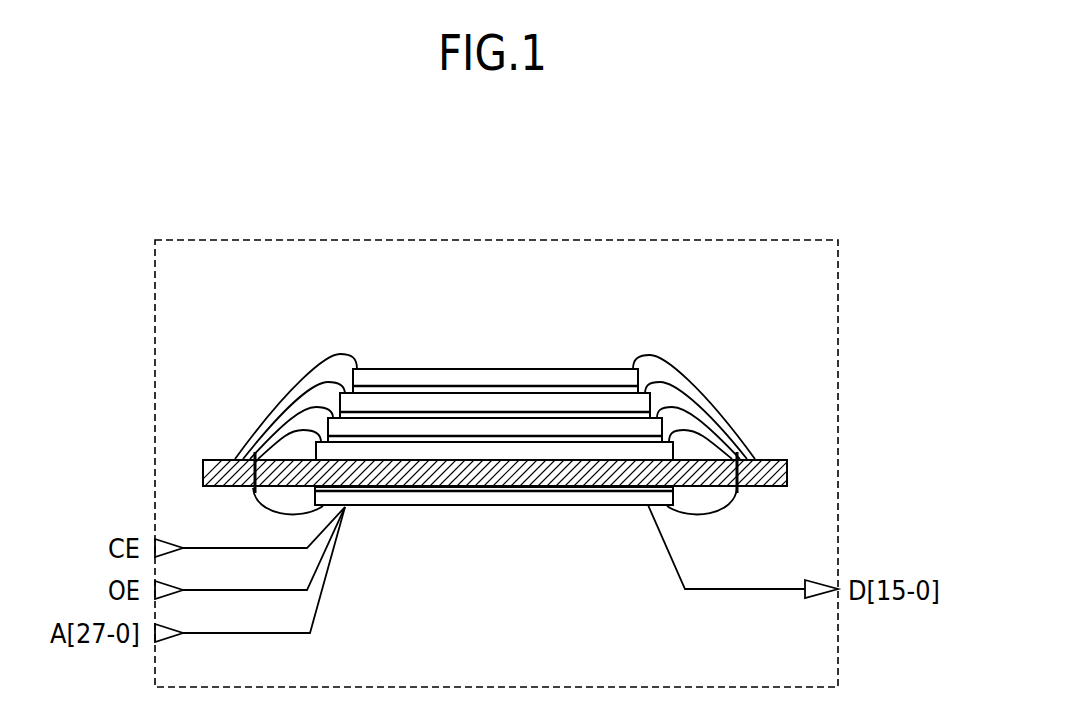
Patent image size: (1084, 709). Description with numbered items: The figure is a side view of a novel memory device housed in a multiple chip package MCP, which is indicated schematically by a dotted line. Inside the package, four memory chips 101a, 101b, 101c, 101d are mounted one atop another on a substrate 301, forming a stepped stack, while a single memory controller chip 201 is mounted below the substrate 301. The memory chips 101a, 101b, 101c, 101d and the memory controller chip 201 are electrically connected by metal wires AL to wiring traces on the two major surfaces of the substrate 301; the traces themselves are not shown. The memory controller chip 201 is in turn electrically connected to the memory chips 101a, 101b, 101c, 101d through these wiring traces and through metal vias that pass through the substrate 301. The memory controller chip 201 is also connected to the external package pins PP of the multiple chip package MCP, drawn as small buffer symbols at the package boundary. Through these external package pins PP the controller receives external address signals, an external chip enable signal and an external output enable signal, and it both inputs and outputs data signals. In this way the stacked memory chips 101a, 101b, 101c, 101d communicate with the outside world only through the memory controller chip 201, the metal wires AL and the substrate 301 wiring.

The multiple chip package MCP is at (699, 240).
The substrate 301 is at (770, 459).
The memory chip 101a is at (388, 375).
The memory chip 101b is at (455, 405).
The memory chip 101c is at (528, 432).
The memory chip 101d is at (603, 452).
The memory controller chip 201 is at (493, 497).
The metal wires AL is at (680, 366).
The external package pins PP is at (170, 541).